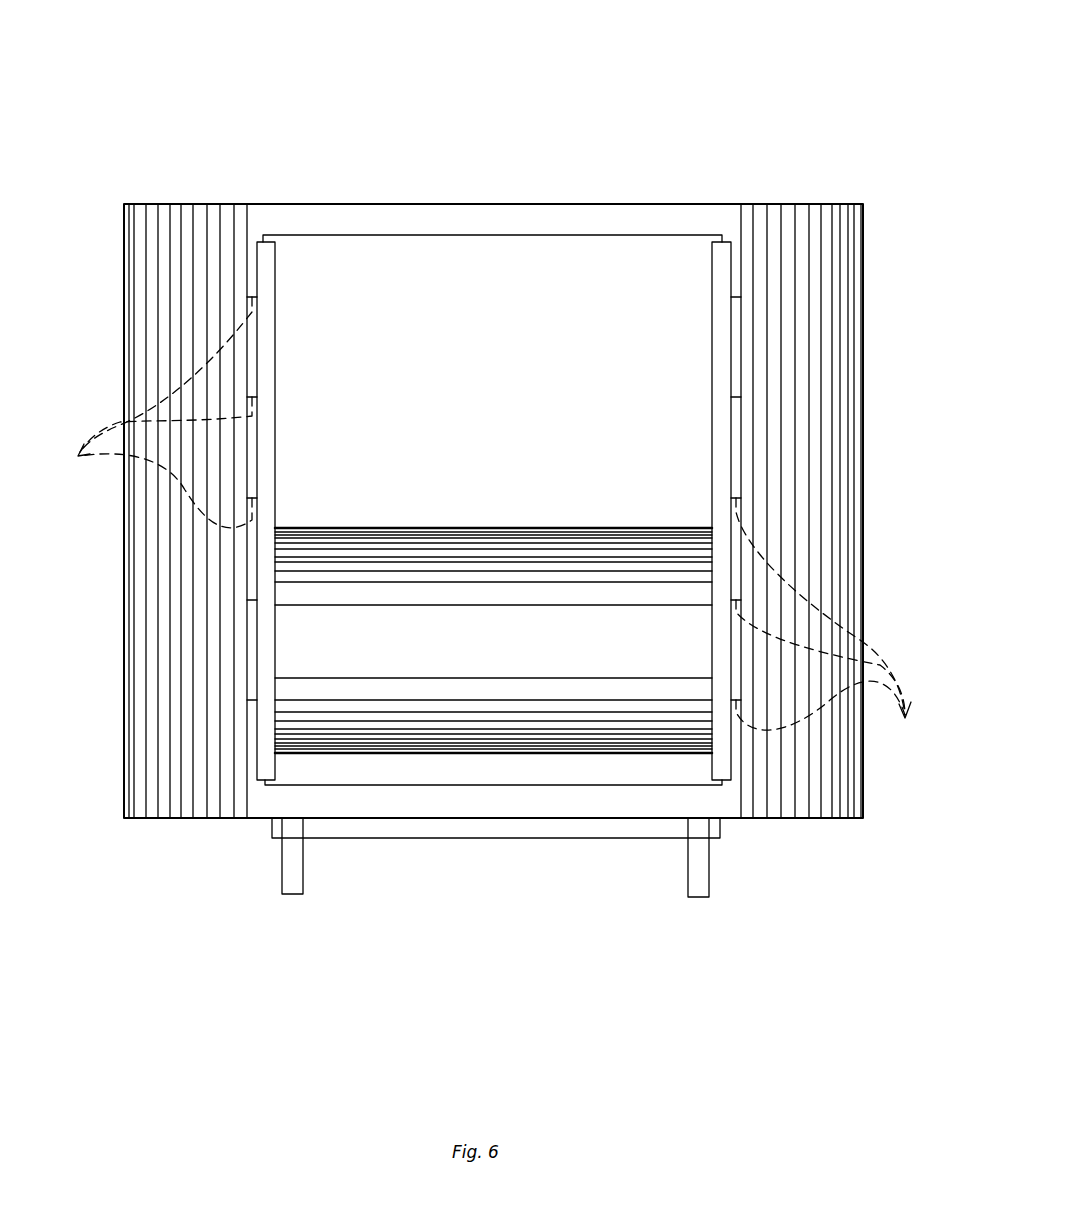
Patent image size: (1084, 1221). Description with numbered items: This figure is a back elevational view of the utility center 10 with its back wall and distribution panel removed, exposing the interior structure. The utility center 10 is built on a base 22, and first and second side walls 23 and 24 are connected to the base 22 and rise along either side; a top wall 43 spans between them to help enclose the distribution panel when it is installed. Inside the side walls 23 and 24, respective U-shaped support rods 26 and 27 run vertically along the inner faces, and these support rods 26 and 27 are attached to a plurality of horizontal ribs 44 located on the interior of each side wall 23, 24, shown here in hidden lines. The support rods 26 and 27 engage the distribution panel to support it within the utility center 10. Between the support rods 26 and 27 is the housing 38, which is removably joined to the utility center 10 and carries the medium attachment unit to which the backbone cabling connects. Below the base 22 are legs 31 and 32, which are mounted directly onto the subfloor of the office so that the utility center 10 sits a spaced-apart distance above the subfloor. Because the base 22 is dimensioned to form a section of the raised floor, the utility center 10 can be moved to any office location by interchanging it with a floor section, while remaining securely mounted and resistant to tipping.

The utility center 10 is at (158, 104).
The base 22 is at (515, 825).
The first side wall 23 is at (124, 365).
The second side wall 24 is at (863, 470).
The U-shaped support rod 26 is at (275, 267).
The U-shaped support rod 27 is at (712, 300).
The leg 31 is at (295, 880).
The leg 32 is at (700, 875).
The housing 38 is at (298, 645).
The top wall 43 is at (448, 204).
The horizontal ribs 44 is at (493, 522).